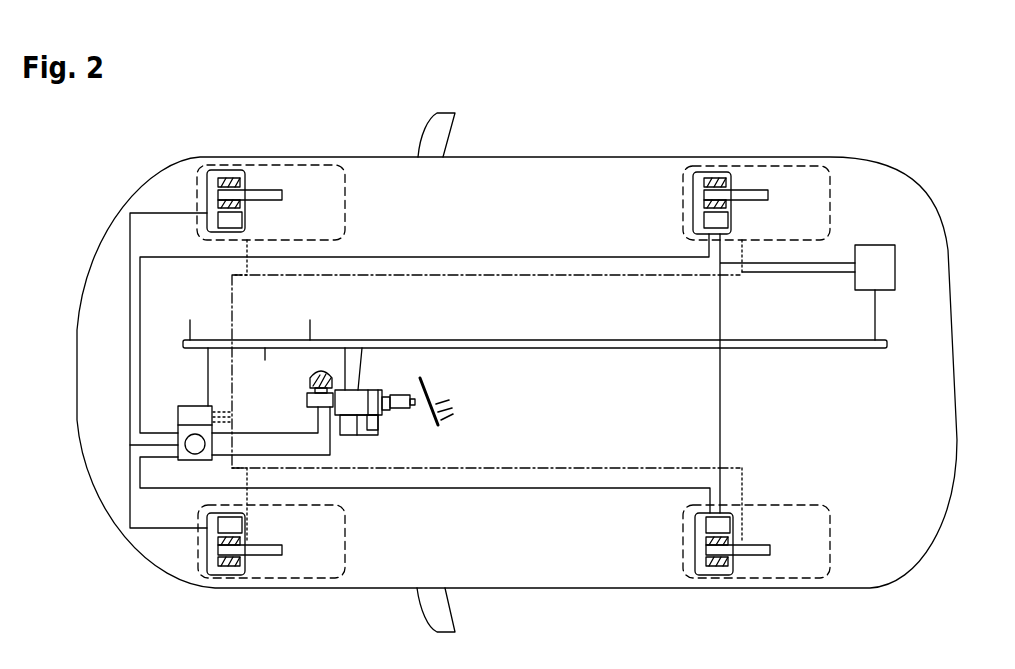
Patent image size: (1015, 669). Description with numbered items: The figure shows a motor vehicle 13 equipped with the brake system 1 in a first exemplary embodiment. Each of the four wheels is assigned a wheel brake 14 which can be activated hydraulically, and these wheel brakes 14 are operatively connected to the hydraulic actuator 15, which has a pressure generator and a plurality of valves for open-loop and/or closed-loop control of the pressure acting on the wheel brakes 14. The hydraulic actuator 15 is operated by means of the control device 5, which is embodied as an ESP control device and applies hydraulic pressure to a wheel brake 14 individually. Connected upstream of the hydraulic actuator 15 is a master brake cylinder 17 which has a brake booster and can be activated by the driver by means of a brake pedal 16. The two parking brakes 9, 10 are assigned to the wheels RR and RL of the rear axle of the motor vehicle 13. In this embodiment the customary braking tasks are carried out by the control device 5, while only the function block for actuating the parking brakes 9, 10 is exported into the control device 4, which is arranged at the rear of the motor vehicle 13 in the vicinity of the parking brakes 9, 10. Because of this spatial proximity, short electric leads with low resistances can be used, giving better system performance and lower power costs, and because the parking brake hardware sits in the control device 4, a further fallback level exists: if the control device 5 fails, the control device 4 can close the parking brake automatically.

The brake system 1 is at (938, 120).
The control device 4 is at (888, 268).
The control device 5 is at (178, 413).
The parking brake 9 is at (684, 234).
The parking brake 10 is at (690, 512).
The motor vehicle 13 is at (121, 203).
The wheel brake 14 is at (488, 375).
The hydraulic actuator 15 is at (182, 459).
The brake pedal 16 is at (445, 424).
The master brake cylinder 17 is at (366, 390).